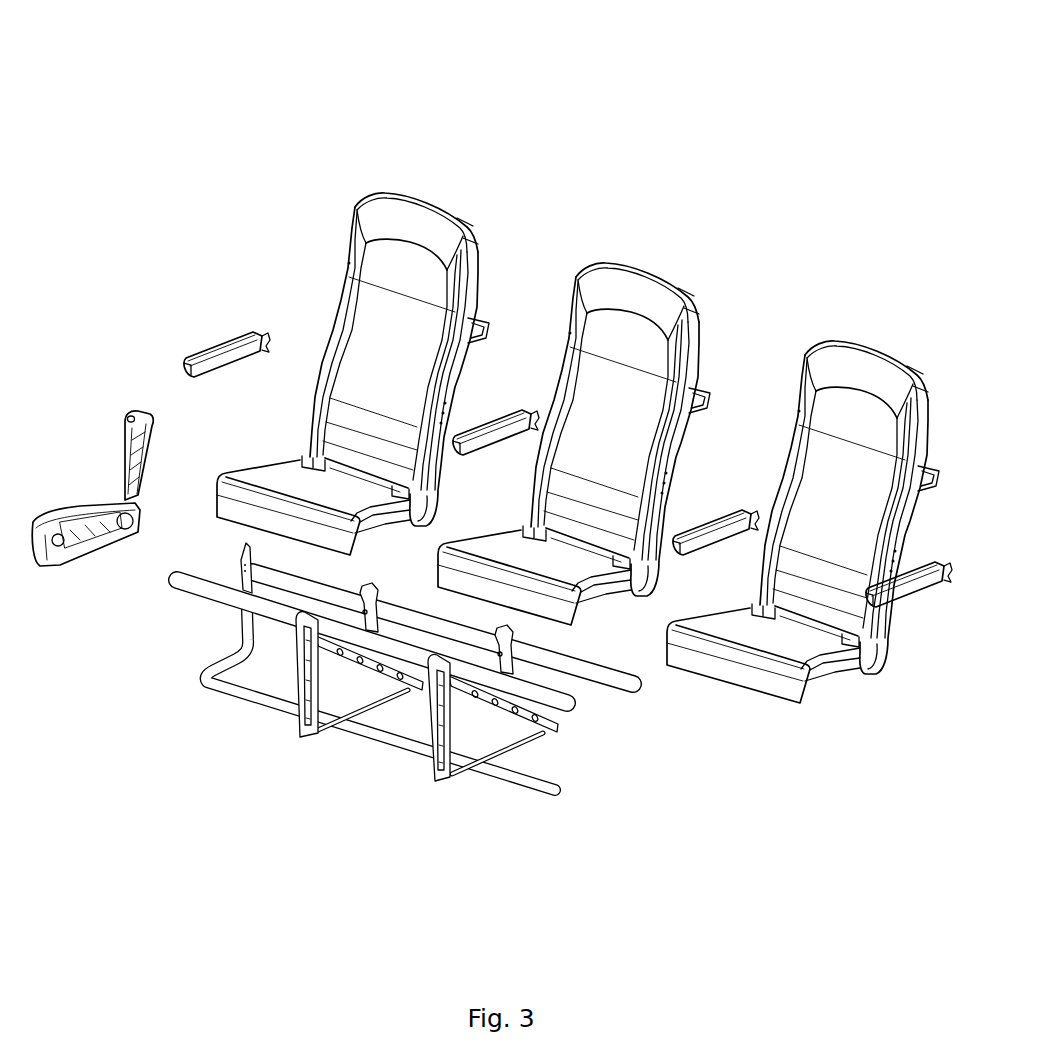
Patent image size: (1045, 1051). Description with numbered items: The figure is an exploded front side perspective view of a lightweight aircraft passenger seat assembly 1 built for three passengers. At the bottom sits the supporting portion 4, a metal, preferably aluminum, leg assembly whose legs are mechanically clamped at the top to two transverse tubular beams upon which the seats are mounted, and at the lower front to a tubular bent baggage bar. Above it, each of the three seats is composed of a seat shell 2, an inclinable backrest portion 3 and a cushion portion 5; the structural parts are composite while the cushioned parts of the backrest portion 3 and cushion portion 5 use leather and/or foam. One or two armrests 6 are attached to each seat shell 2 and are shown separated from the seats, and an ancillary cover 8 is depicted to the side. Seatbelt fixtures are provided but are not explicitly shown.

The lightweight aircraft passenger seat assembly 1 is at (723, 118).
The seat shell 2 is at (403, 188).
The backrest portion 3 is at (380, 363).
The supporting portion 4 is at (338, 839).
The cushion portion 5 is at (401, 234).
The armrest 6 is at (217, 346).
The cover 8 is at (122, 502).